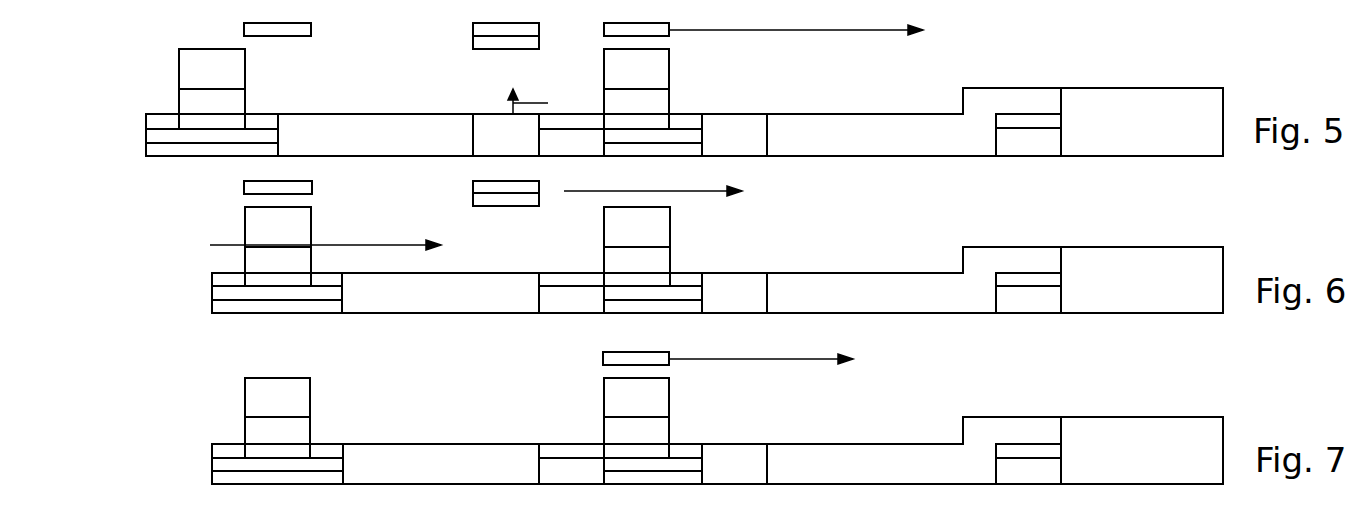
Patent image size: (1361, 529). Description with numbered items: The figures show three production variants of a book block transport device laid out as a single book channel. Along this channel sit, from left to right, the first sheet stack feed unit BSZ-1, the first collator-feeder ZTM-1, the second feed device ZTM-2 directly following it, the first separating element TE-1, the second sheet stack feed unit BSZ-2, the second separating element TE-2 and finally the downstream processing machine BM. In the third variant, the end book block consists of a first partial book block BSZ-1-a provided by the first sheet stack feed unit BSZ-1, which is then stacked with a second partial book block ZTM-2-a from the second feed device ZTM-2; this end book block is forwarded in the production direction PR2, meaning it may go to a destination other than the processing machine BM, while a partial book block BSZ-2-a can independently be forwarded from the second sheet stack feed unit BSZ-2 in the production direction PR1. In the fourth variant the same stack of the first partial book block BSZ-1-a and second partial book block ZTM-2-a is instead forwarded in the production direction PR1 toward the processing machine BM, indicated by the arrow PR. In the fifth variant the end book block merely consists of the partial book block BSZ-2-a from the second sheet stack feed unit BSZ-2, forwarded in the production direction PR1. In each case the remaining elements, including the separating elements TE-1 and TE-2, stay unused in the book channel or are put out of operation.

In FIG. 5, the first sheet stack feed unit BSZ-1 is at (190, 70).
In FIG. 6, the first sheet stack feed unit BSZ-1 is at (262, 222).
In FIG. 5, the first partial book block BSZ-1-a is at (290, 28).
In FIG. 6, the first partial book block BSZ-1-a is at (258, 190).
In FIG. 5, the second sheet stack feed unit BSZ-2 is at (648, 74).
In FIG. 6, the second sheet stack feed unit BSZ-2 is at (653, 224).
In FIG. 7, the second sheet stack feed unit BSZ-2 is at (648, 402).
In FIG. 5, the partial book block BSZ-2-a is at (672, 28).
In FIG. 7, the partial book block BSZ-2-a is at (612, 358).
In FIG. 5, the first collator-feeder ZTM-1 is at (366, 135).
In FIG. 5, the second feed device ZTM-2 is at (505, 130).
In FIG. 5, the second partial book block ZTM-2-a is at (497, 28).
In FIG. 5, the first separating element TE-1 is at (571, 135).
In FIG. 6, the first separating element TE-1 is at (571, 294).
In FIG. 7, the first separating element TE-1 is at (571, 465).
In FIG. 5, the second separating element TE-2 is at (1028, 135).
In FIG. 6, the second separating element TE-2 is at (1028, 293).
In FIG. 7, the second separating element TE-2 is at (1028, 464).
In FIG. 5, the processing machine BM is at (1155, 118).
In FIG. 6, the processing machine BM is at (1153, 270).
In FIG. 7, the processing machine BM is at (1150, 445).
In FIG. 6, the process direction PR is at (325, 235).
In FIG. 5, the production direction PR1 is at (819, 30).
In FIG. 6, the production direction PR1 is at (653, 181).
In FIG. 7, the production direction PR1 is at (761, 348).
In FIG. 5, the production direction PR2 is at (550, 102).